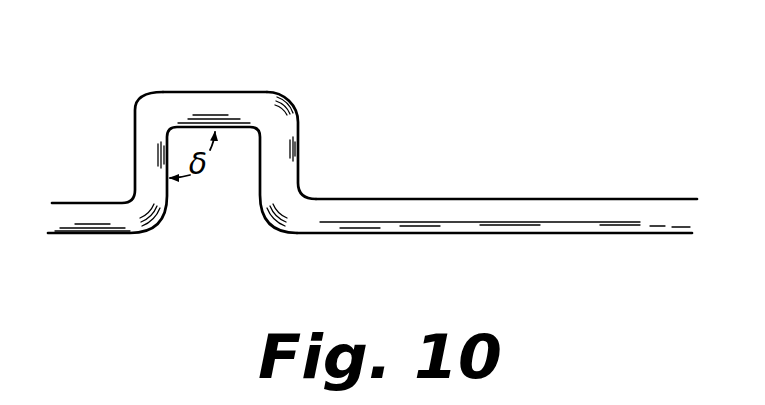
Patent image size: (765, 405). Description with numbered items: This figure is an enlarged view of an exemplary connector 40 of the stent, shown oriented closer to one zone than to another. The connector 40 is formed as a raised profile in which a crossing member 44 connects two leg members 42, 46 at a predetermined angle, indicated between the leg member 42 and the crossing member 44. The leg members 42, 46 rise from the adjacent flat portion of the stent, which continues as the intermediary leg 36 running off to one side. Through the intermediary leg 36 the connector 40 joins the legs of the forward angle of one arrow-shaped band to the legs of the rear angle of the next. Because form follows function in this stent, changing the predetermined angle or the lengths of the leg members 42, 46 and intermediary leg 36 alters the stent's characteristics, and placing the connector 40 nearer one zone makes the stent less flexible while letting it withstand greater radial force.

The intermediary leg 36 is at (569, 208).
The connector 40 is at (306, 107).
The leg member 42 is at (138, 148).
The crossing member 44 is at (212, 107).
The leg member 46 is at (299, 153).